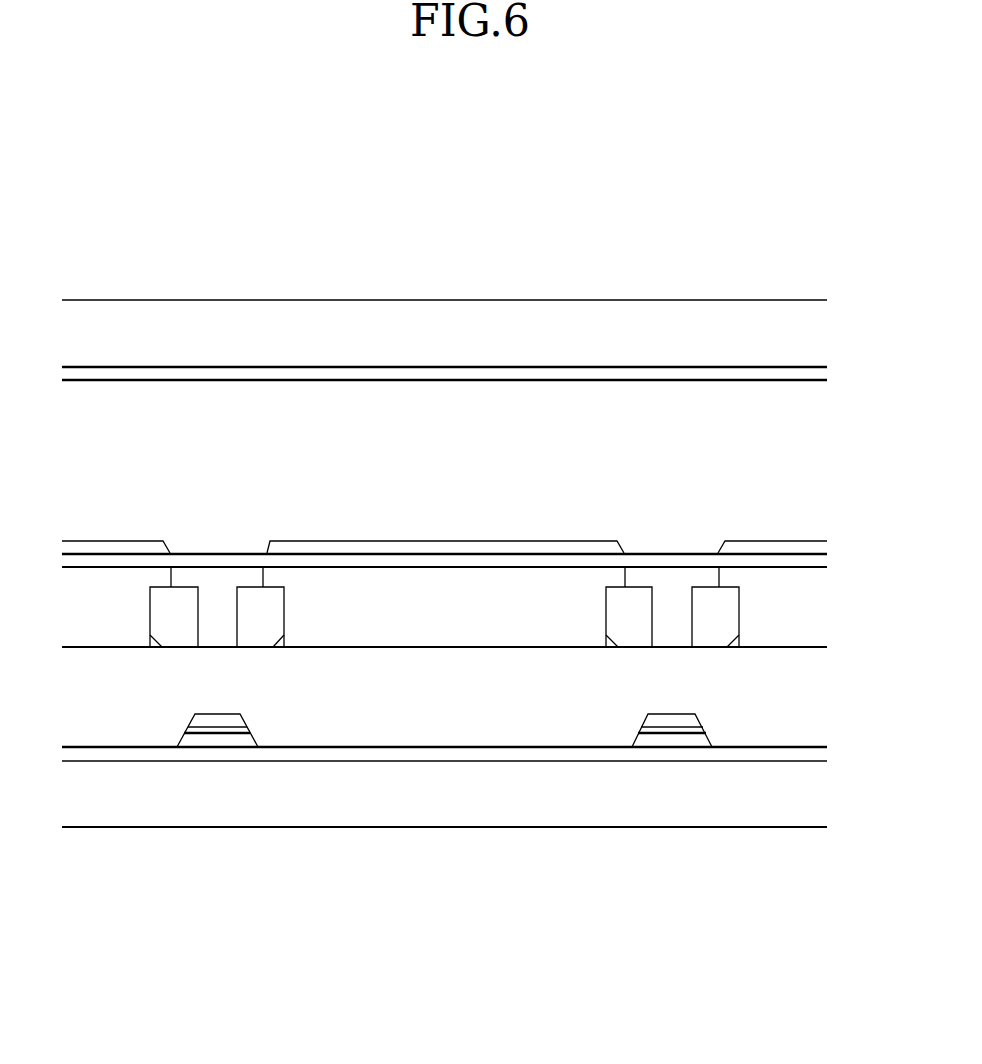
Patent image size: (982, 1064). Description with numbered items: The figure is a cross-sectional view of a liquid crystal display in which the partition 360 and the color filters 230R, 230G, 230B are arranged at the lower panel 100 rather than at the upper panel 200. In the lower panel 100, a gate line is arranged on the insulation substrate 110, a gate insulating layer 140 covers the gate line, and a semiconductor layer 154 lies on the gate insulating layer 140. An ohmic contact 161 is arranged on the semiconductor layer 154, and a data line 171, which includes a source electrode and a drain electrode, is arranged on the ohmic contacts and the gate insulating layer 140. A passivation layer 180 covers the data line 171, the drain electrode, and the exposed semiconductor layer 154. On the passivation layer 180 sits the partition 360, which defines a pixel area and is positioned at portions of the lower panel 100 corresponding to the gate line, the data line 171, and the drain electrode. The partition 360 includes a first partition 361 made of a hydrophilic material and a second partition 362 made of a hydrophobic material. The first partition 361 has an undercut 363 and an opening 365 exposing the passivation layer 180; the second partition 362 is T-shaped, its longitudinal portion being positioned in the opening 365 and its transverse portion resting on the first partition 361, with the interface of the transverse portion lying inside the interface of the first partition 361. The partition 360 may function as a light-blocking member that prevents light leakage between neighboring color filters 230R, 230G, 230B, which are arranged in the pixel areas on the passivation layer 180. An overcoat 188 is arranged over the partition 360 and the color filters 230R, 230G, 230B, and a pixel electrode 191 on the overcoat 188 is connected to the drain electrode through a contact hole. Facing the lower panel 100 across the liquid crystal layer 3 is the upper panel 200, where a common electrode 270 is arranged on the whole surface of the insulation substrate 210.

The insulation substrate 210 is at (487, 323).
The common electrode 270 is at (433, 372).
The upper panel 200 is at (829, 300).
The liquid crystal layer 3 is at (829, 384).
The lower panel 100 is at (829, 538).
The pixel electrode 191 is at (105, 547).
The overcoat 188 is at (578, 560).
The passivation layer 180 is at (465, 720).
The partition 360 is at (283, 486).
The opening 365 is at (199, 608).
The second partition 362 is at (225, 598).
The first partition 361 is at (248, 597).
The undercut 363 is at (273, 645).
The red color filter 230R is at (125, 623).
The green color filter 230G is at (485, 624).
The blue color filter 230B is at (814, 624).
The data line 171 is at (202, 723).
The ohmic contact 161 is at (220, 731).
The semiconductor layer 154 is at (238, 740).
The gate insulating layer 140 is at (392, 753).
The insulation substrate 110 is at (544, 807).